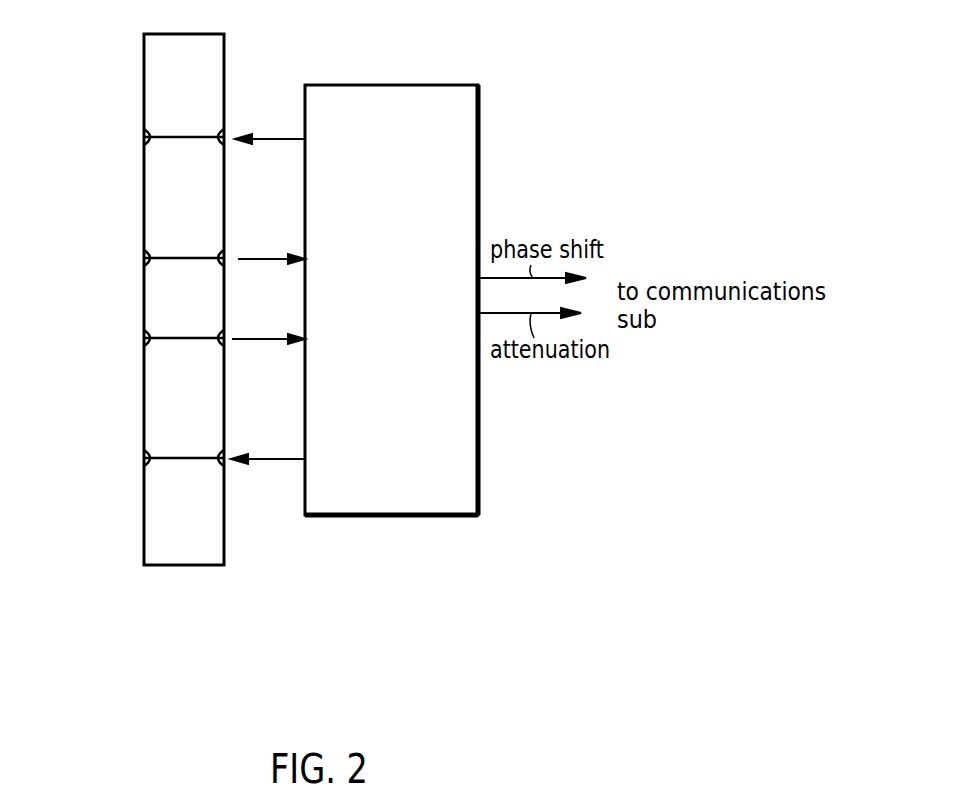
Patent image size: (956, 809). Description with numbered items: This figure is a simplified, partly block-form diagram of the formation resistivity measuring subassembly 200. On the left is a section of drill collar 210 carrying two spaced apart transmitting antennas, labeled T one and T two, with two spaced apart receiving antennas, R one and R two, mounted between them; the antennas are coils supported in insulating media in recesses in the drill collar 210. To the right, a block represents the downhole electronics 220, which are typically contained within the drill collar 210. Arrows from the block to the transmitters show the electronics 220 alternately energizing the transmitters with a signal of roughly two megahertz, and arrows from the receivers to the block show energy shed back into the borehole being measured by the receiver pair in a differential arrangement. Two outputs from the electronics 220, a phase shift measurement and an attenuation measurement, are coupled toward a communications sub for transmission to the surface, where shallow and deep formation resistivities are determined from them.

The formation resistivity measuring subassembly 200 is at (144, 344).
The drill collar 210 is at (154, 62).
The downhole electronics 220 is at (379, 506).